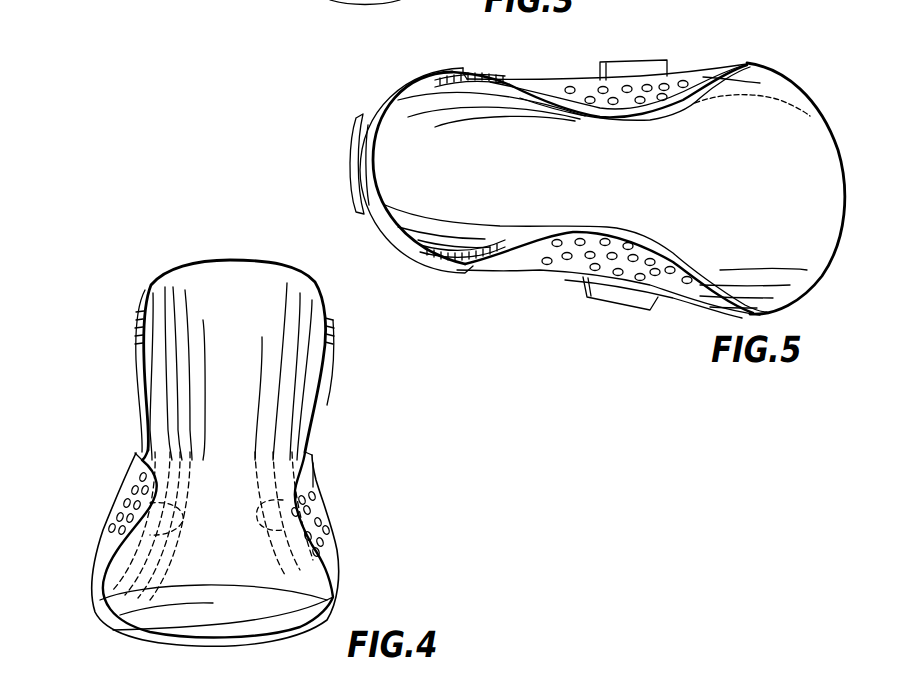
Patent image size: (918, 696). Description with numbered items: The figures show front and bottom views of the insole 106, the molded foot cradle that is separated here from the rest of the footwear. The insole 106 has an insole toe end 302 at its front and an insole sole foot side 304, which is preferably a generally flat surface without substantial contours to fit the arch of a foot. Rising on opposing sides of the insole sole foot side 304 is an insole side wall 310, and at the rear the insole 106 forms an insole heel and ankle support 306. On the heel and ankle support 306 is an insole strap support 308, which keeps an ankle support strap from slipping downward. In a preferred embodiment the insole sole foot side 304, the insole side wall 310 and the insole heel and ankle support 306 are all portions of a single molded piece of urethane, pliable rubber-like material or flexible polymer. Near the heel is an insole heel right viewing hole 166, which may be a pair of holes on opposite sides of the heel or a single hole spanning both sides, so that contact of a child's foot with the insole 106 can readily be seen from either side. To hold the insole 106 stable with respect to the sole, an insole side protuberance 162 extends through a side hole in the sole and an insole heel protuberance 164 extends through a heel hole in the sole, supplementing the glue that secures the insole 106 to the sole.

In FIG. 4, the insole 106 is at (152, 250).
In FIG. 5, the insole 106 is at (640, 47).
In FIG. 5, the insole side protuberance 162 is at (647, 63).
In FIG. 5, the insole heel protuberance 164 is at (357, 144).
In FIG. 4, the insole heel right viewing hole 166 is at (123, 490).
In FIG. 4, the insole toe end 302 is at (213, 630).
In FIG. 5, the insole toe end 302 is at (807, 170).
In FIG. 4, the insole sole foot side 304 is at (125, 628).
In FIG. 5, the insole sole foot side 304 is at (663, 167).
In FIG. 5, the insole heel and ankle support 306 is at (400, 110).
In FIG. 4, the insole strap support 308 is at (160, 299).
In FIG. 5, the insole strap support 308 is at (370, 118).
In FIG. 4, the insole side wall 310 is at (110, 515).
In FIG. 5, the insole side wall 310 is at (578, 92).